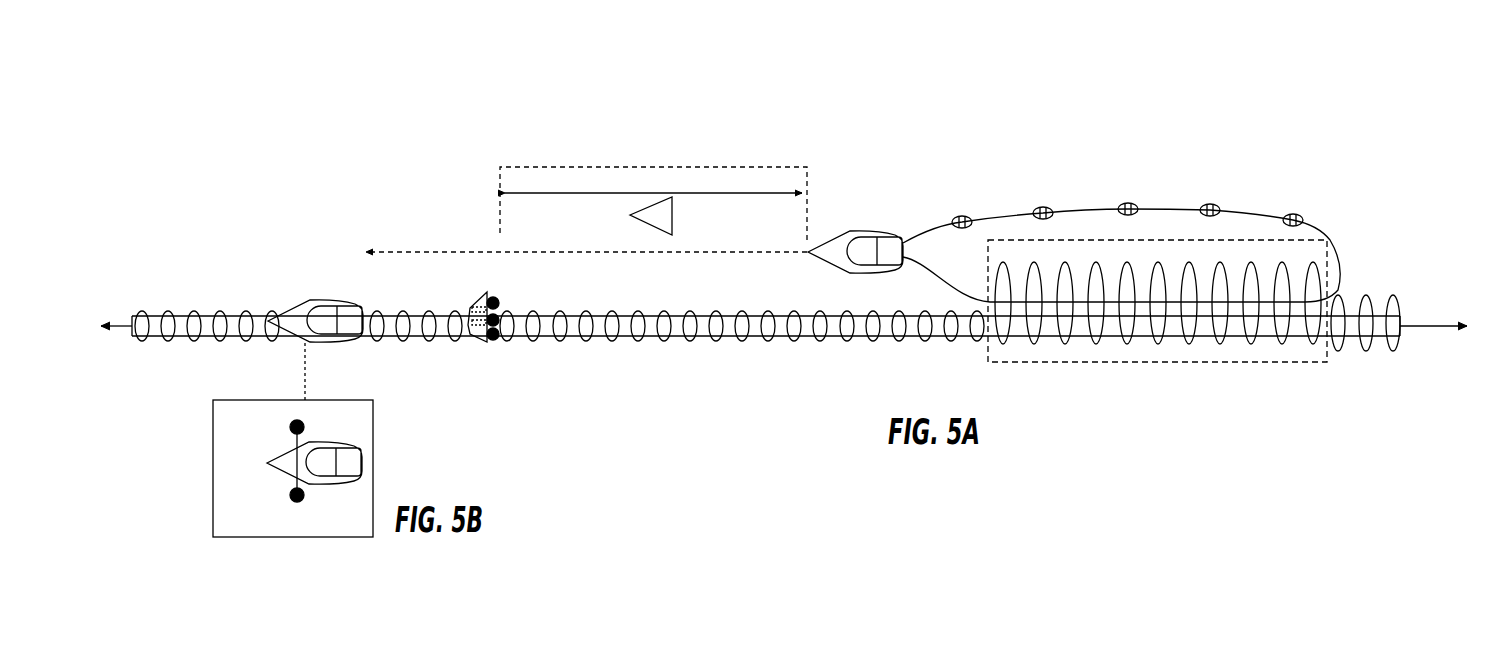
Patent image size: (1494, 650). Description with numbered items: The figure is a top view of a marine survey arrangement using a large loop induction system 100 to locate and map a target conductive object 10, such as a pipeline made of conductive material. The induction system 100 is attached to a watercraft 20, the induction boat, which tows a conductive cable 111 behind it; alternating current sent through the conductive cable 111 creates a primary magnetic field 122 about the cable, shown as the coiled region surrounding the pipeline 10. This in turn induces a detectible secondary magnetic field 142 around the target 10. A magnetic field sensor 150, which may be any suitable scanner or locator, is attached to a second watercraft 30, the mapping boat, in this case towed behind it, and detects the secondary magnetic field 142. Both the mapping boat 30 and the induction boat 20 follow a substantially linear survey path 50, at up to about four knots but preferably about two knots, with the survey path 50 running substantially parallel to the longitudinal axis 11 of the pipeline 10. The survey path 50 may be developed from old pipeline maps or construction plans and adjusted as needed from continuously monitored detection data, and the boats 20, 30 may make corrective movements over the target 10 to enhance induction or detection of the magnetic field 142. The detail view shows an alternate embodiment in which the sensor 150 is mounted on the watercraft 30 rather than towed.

In FIG. 5A, the large loop induction system 100 is at (761, 91).
In FIG. 5A, the longitudinal axis 11 is at (118, 323).
In FIG. 5A, the target conductive object 10 is at (1393, 320).
In FIG. 5A, the secondary magnetic field 142 is at (742, 338).
In FIG. 5A, the survey path 50 is at (170, 312).
In FIG. 5A, the second watercraft 30 is at (330, 299).
In FIG. 5B, the second watercraft 30 is at (340, 485).
In FIG. 5A, the magnetic field sensor 150 is at (483, 342).
In FIG. 5B, the magnetic field sensor 150 is at (293, 502).
In FIG. 5A, the watercraft 20 is at (878, 232).
In FIG. 5A, the conductive cable 111 is at (1332, 232).
In FIG. 5A, the primary magnetic field 122 is at (1220, 362).